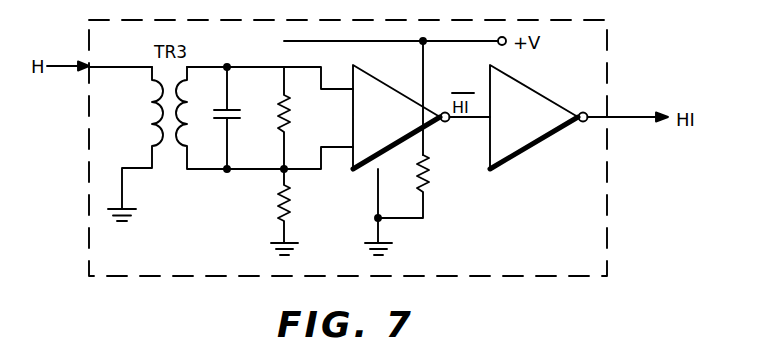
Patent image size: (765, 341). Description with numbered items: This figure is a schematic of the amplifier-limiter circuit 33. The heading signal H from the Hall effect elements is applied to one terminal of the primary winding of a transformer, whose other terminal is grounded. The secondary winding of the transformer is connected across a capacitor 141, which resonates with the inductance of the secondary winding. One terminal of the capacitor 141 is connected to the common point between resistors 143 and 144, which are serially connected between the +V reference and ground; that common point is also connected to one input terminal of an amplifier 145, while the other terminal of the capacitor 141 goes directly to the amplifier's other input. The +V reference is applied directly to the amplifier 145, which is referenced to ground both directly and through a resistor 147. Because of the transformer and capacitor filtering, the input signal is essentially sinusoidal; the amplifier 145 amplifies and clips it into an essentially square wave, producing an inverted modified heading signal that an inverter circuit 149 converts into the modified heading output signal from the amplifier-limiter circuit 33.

The amplifier-limiter circuit 33 is at (605, 62).
The capacitor 141 is at (238, 118).
The resistor 143 is at (288, 212).
The resistor 144 is at (292, 125).
The amplifier 145 is at (406, 118).
The resistor 147 is at (432, 183).
The inverter circuit 149 is at (544, 118).